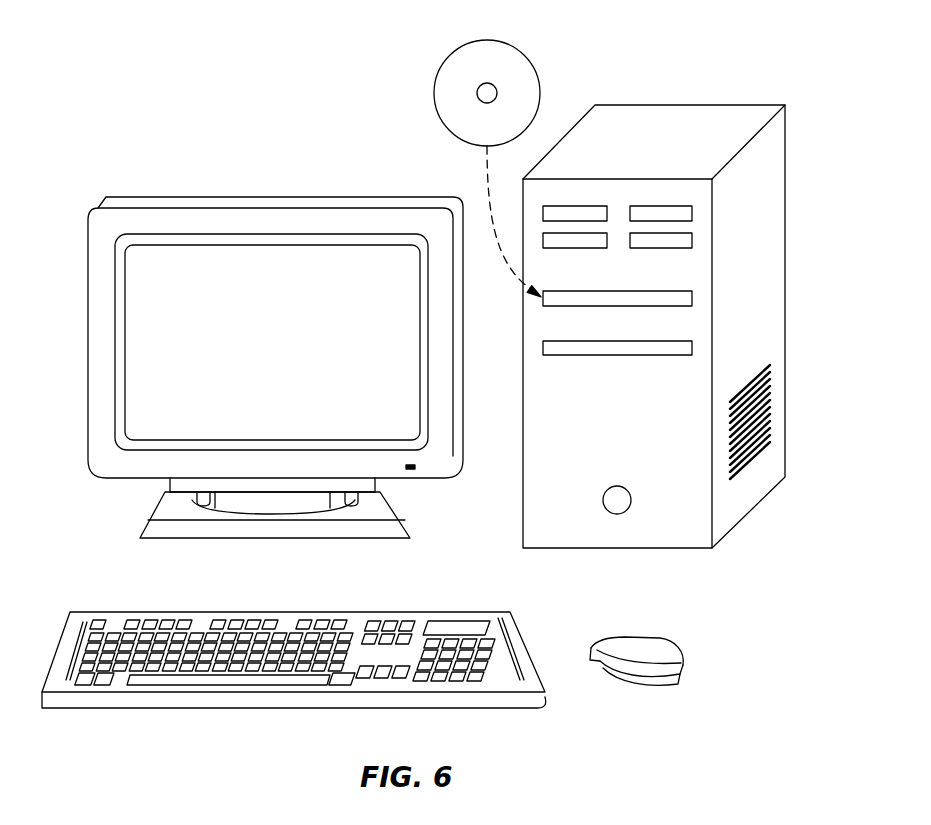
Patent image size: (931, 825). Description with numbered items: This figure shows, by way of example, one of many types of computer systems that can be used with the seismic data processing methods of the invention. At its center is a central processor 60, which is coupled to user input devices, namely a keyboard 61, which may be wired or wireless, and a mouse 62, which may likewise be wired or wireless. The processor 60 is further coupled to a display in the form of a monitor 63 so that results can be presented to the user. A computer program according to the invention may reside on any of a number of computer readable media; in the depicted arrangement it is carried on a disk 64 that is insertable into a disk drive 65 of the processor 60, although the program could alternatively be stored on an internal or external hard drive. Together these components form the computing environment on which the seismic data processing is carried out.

The central processor 60 is at (693, 103).
The keyboard 61 is at (137, 612).
The mouse 62 is at (648, 637).
The monitor 63 is at (271, 197).
The disk 64 is at (487, 40).
The disk drive 65 is at (680, 291).